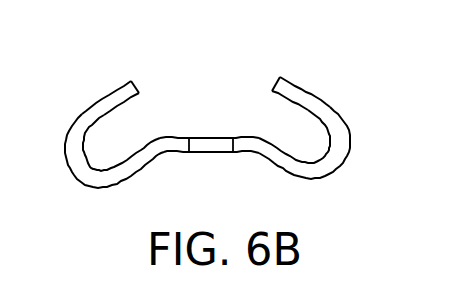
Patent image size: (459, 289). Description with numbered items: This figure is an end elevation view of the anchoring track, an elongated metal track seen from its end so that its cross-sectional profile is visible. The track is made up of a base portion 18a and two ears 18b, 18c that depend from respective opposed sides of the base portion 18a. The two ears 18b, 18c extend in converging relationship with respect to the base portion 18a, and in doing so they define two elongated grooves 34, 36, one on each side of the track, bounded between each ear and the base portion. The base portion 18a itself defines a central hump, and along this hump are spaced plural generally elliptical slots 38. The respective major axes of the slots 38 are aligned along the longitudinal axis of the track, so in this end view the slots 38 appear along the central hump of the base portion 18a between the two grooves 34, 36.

The base portion 18a is at (168, 138).
The ear 18b is at (320, 95).
The ear 18c is at (92, 101).
The elongated groove 34 is at (287, 130).
The elongated groove 36 is at (118, 137).
The elliptical slots 38 is at (212, 152).